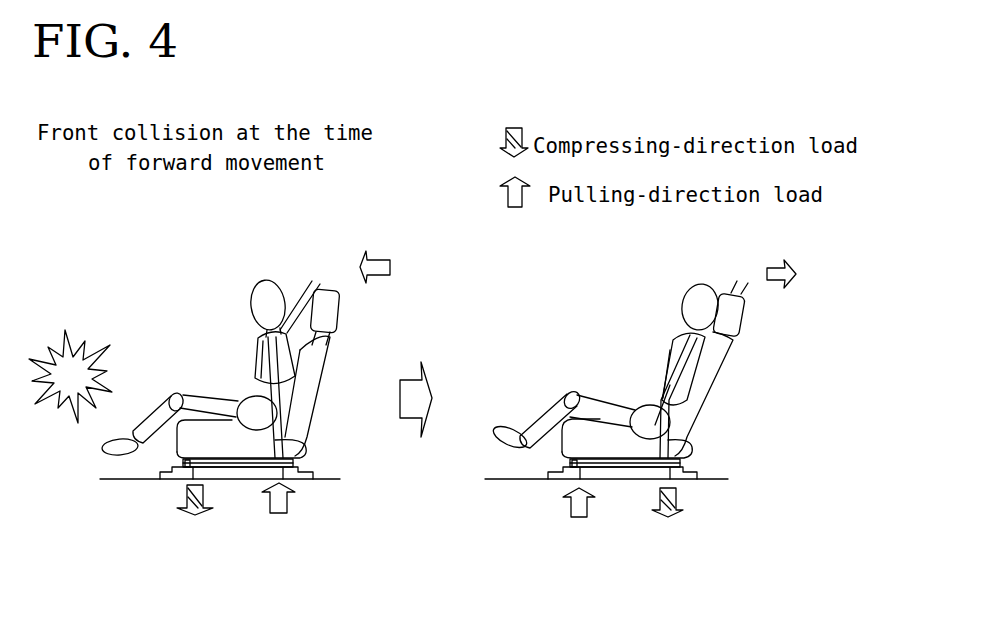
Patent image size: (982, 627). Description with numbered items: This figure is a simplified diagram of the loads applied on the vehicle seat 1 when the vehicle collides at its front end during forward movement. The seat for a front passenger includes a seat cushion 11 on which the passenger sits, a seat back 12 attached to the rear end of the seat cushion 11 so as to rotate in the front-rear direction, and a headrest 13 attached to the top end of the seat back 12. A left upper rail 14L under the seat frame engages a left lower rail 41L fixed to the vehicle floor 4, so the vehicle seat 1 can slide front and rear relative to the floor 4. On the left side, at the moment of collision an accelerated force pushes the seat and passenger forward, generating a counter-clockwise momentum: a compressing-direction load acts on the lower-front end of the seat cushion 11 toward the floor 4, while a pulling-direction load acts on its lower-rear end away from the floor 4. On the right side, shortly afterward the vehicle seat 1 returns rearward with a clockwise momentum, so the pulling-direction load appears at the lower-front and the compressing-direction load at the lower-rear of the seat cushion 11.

The vehicle seat 1 is at (489, 374).
The floor 4 is at (115, 476).
The seat cushion 11 is at (178, 403).
The seat back 12 is at (310, 395).
The headrest 13 is at (340, 312).
The left upper rail 14L is at (303, 458).
The left lower rail 41L is at (173, 464).